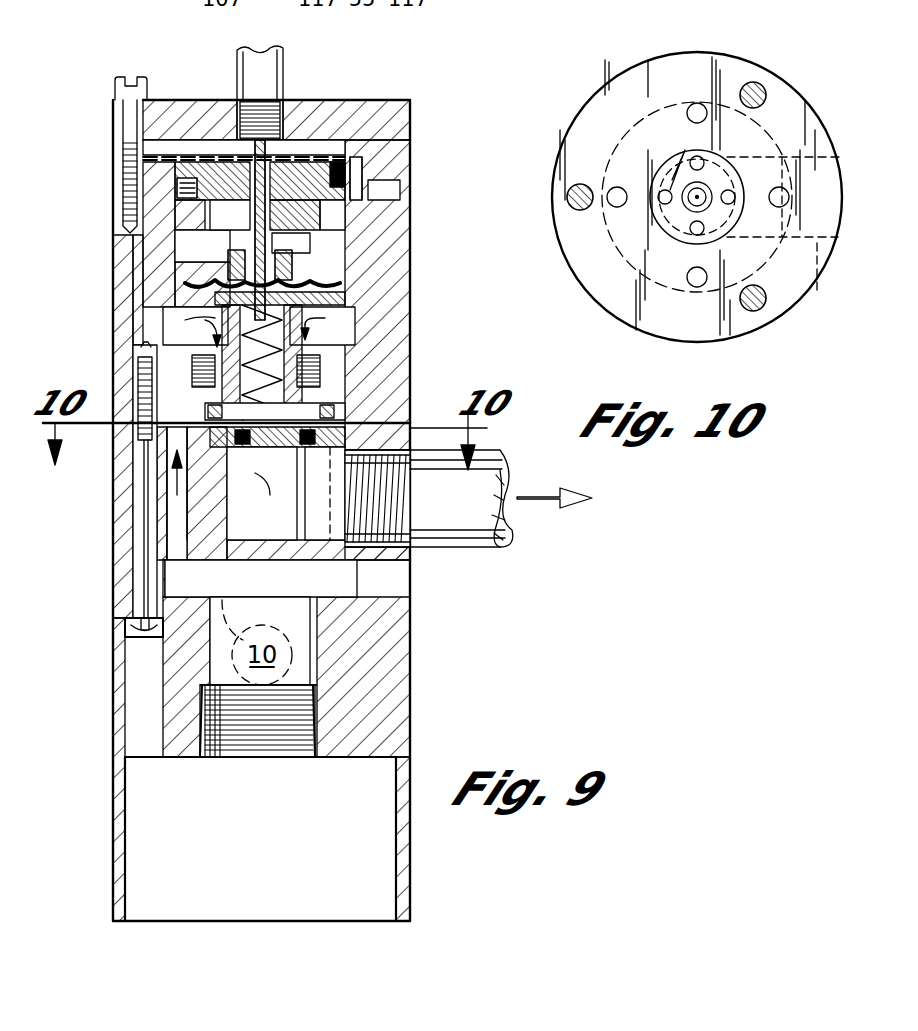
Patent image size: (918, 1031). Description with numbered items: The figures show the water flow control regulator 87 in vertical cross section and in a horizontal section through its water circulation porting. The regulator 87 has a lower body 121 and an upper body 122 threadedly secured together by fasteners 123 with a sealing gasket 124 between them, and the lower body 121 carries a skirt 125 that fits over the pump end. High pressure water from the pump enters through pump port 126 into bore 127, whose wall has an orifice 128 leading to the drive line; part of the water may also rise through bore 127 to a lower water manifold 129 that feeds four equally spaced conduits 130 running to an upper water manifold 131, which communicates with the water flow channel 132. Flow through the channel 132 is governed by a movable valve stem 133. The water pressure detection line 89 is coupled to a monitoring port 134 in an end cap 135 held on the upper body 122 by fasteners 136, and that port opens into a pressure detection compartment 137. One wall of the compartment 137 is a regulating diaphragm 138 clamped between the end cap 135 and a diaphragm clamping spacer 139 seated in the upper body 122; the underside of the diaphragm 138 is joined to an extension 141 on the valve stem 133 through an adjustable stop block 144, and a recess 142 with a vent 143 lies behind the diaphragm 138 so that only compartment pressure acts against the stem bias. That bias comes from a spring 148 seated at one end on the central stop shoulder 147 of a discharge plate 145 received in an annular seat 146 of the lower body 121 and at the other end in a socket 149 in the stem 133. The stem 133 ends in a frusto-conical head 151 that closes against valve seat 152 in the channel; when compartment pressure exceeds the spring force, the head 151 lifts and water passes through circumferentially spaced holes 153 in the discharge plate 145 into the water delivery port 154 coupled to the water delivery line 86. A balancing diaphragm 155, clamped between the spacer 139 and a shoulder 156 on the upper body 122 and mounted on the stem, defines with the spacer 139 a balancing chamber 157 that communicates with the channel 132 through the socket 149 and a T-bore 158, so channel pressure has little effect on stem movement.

In FIG. 9, the water delivery line 86 is at (490, 548).
In FIG. 9, the water flow control regulator 87 is at (113, 300).
In FIG. 9, the water pressure detection line 89 is at (286, 62).
In FIG. 9, the lower body 121 is at (388, 634).
In FIG. 9, the upper body 122 is at (130, 226).
In FIG. 9, the fasteners 123 is at (142, 538).
In FIG. 10, the fasteners 123 is at (756, 84).
In FIG. 9, the sealing gasket 124 is at (360, 405).
In FIG. 9, the skirt 125 is at (411, 866).
In FIG. 9, the pump port 126 is at (300, 740).
In FIG. 9, the bore 127 is at (318, 615).
In FIG. 9, the orifice 128 is at (217, 580).
In FIG. 9, the lower water manifold 129 is at (348, 592).
In FIG. 10, the lower water manifold 129 is at (770, 128).
In FIG. 9, the conduits 130 is at (180, 510).
In FIG. 10, the conduits 130 is at (696, 104).
In FIG. 9, the upper water manifold 131 is at (340, 325).
In FIG. 9, the water flow channel 132 is at (213, 345).
In FIG. 9, the valve stem 133 is at (330, 286).
In FIG. 9, the monitoring port 134 is at (292, 104).
In FIG. 9, the end cap 135 is at (362, 118).
In FIG. 9, the fasteners 136 is at (125, 110).
In FIG. 9, the pressure detection compartment 137 is at (195, 143).
In FIG. 9, the regulating diaphragm 138 is at (118, 150).
In FIG. 9, the diaphragm clamping spacer 139 is at (360, 205).
In FIG. 9, the extension 141 is at (220, 160).
In FIG. 9, the recess 142 is at (180, 183).
In FIG. 9, the vent 143 is at (400, 190).
In FIG. 9, the adjustable stop block 144 is at (380, 165).
In FIG. 9, the discharge plate 145 is at (265, 465).
In FIG. 9, the annular seat 146 is at (410, 462).
In FIG. 9, the central stop shoulder 147 is at (262, 493).
In FIG. 9, the spring 148 is at (236, 447).
In FIG. 9, the socket 149 is at (185, 322).
In FIG. 9, the frusto-conical head 151 is at (150, 428).
In FIG. 9, the valve seat 152 is at (195, 370).
In FIG. 9, the holes 153 is at (316, 450).
In FIG. 10, the holes 153 is at (668, 190).
In FIG. 9, the water delivery port 154 is at (410, 565).
In FIG. 10, the water delivery port 154 is at (818, 270).
In FIG. 9, the balancing diaphragm 155 is at (300, 276).
In FIG. 9, the shoulder 156 is at (330, 297).
In FIG. 9, the balancing chamber 157 is at (210, 252).
In FIG. 9, the T-bore 158 is at (305, 255).